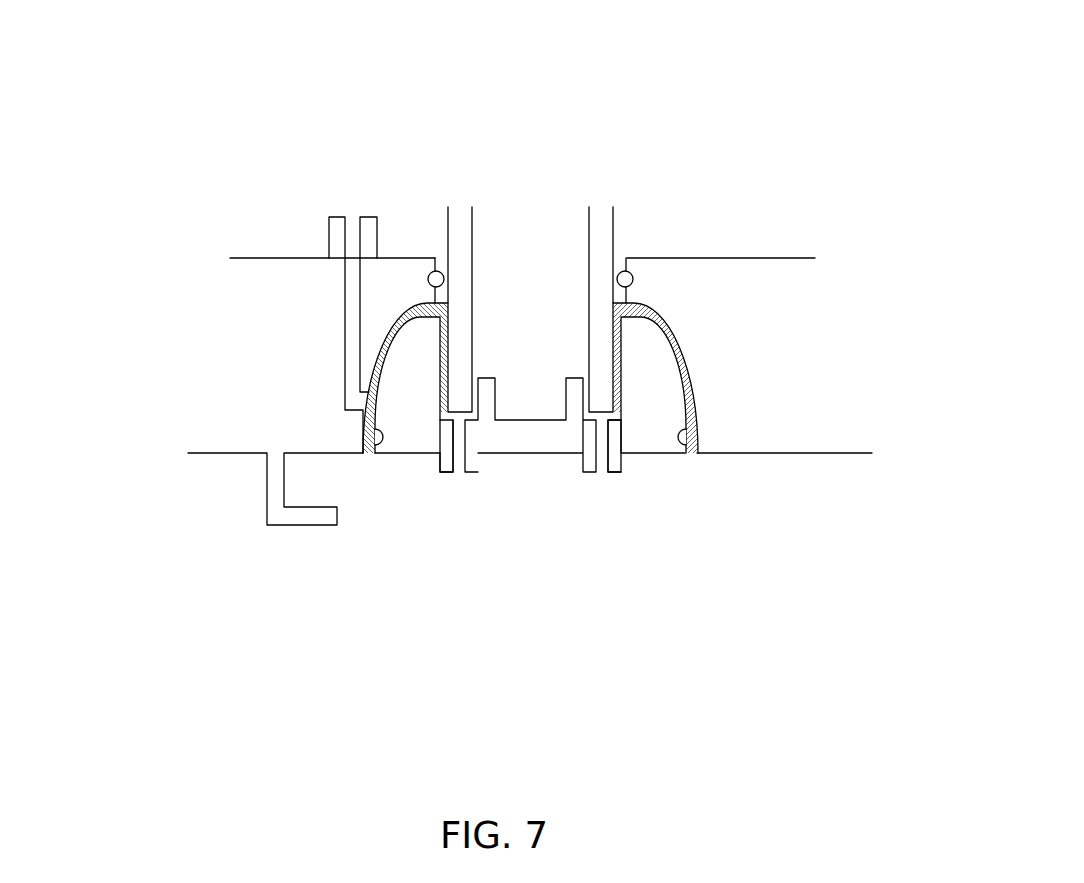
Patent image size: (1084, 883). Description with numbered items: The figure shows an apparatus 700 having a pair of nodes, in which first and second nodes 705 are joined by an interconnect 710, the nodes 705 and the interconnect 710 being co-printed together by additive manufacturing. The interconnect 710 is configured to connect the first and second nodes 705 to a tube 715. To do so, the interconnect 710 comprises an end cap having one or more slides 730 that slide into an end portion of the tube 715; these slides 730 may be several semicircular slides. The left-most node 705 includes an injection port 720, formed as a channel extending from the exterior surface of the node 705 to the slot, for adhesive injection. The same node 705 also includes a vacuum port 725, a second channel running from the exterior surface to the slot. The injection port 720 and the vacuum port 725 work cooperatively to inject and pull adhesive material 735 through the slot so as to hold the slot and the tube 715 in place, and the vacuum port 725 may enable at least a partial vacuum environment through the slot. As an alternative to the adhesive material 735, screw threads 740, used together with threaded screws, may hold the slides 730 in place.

The apparatus 700 is at (798, 150).
The node 705 is at (223, 417).
The interconnect 710 is at (513, 455).
The tube 715 is at (597, 238).
The injection port 720 is at (353, 223).
The vacuum port 725 is at (448, 473).
The slide 730 is at (657, 433).
The adhesive material 735 is at (380, 363).
The screw threads 740 is at (633, 277).